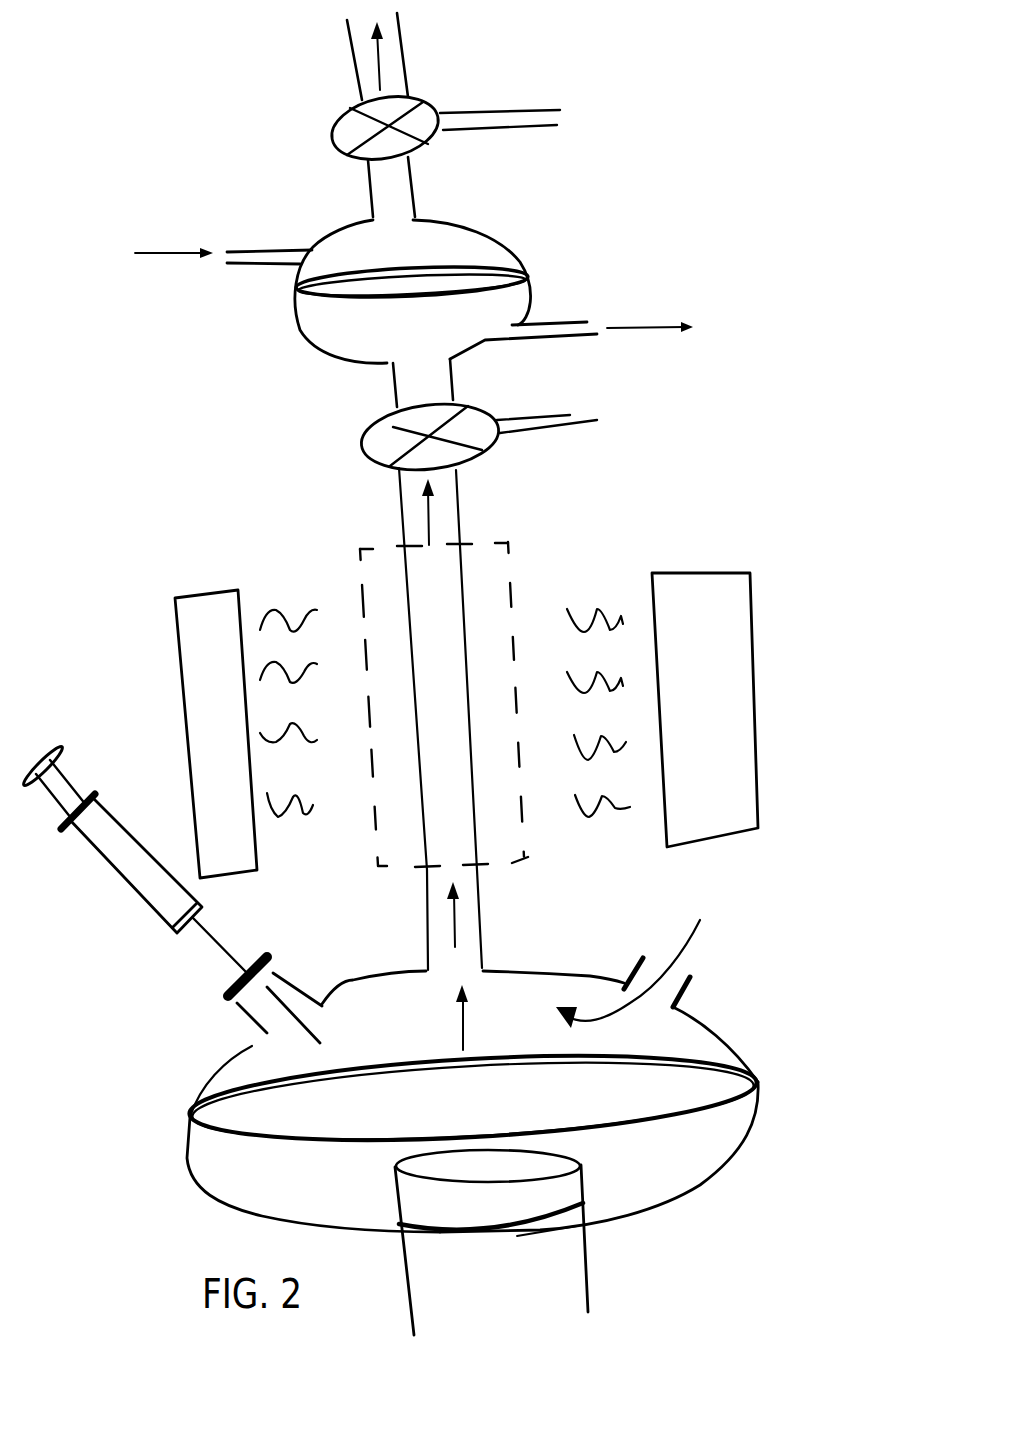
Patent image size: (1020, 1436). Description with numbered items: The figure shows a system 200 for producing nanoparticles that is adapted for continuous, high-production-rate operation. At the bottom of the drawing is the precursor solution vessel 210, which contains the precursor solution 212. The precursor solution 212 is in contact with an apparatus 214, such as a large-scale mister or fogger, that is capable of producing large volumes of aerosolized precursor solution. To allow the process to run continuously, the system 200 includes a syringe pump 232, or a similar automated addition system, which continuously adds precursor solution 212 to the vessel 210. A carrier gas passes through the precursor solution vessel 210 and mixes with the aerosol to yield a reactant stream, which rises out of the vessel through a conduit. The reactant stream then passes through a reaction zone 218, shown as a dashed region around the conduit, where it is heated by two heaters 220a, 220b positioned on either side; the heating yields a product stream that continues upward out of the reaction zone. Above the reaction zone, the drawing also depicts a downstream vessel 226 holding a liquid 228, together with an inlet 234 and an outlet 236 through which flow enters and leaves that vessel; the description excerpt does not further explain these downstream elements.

The system 200 is at (104, 116).
The precursor solution vessel 210 is at (730, 1035).
The precursor solution 212 is at (662, 1172).
The apparatus 214 is at (559, 1266).
The reaction zone 218 is at (380, 872).
The heater 220a is at (200, 667).
The heater 220b is at (717, 668).
The vessel 226 is at (500, 237).
The liquid 228 is at (422, 338).
The syringe pump 232 is at (110, 870).
The inlet 234 is at (243, 265).
The outlet 236 is at (560, 340).